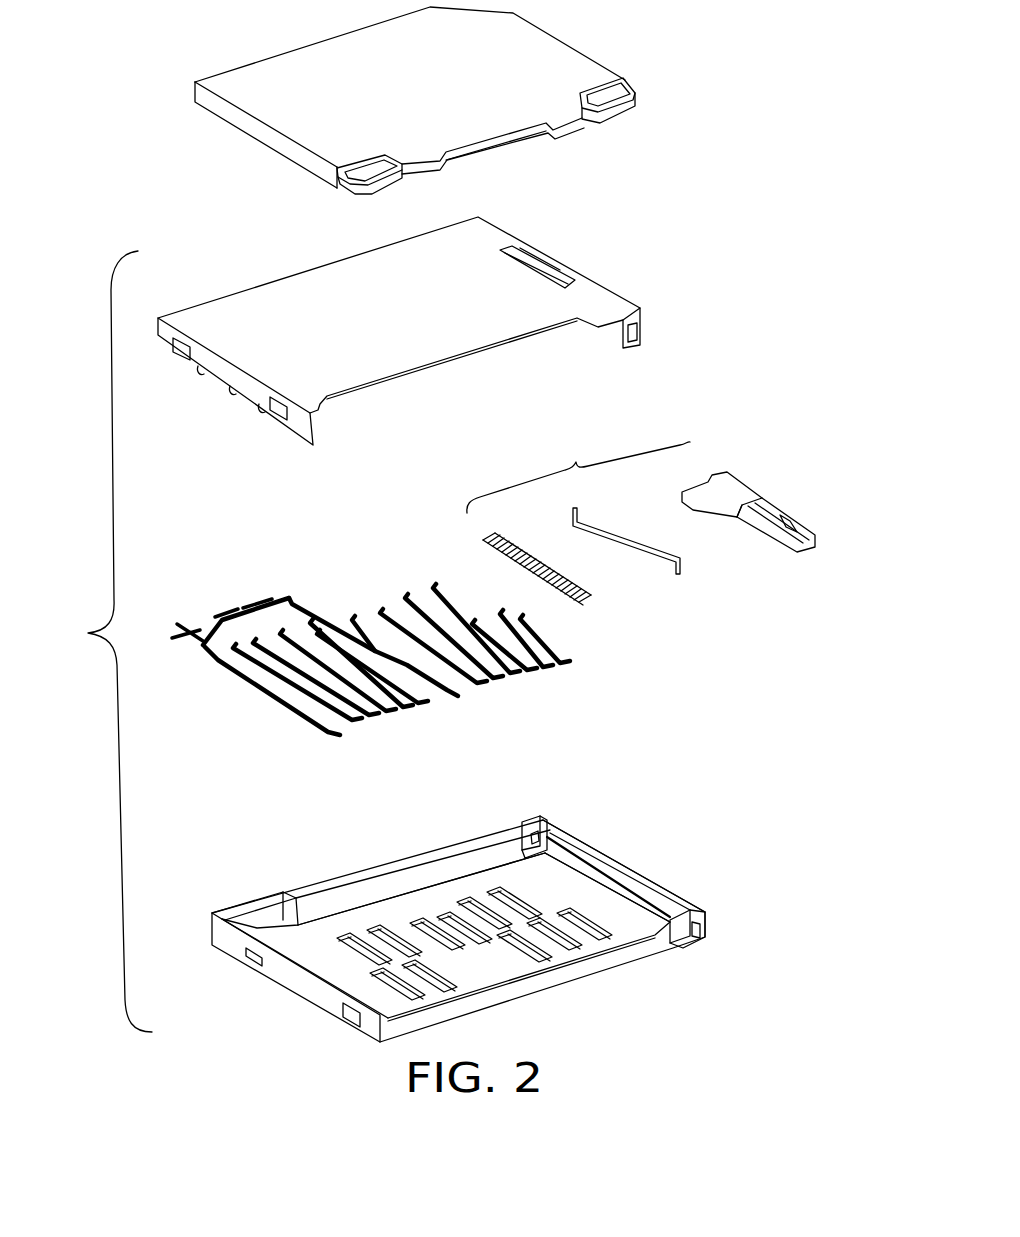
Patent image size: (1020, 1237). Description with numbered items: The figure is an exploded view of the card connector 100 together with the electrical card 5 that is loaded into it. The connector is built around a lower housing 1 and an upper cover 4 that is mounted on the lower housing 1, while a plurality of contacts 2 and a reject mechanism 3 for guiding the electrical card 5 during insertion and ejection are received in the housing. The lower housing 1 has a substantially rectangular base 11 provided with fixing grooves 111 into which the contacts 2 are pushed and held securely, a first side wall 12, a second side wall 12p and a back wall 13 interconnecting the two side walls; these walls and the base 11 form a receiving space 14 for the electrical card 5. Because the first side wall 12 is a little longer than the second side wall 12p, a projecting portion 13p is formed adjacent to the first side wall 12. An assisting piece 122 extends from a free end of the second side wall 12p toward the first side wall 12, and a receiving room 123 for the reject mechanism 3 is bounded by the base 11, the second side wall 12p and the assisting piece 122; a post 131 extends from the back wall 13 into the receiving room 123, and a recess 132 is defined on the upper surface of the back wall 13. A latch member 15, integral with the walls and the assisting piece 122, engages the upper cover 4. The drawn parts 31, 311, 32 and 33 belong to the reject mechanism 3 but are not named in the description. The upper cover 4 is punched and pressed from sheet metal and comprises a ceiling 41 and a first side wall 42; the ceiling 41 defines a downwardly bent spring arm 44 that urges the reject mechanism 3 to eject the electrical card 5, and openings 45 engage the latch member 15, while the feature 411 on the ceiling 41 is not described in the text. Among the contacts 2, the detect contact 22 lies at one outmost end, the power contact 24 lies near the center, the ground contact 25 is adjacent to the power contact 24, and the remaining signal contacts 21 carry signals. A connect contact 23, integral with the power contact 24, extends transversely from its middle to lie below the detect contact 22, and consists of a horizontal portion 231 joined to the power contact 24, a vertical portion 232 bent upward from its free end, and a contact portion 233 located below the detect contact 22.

The card connector 100 is at (88, 633).
The lower housing 1 is at (468, 913).
The base 11 is at (650, 940).
The fixing grooves 111 is at (550, 960).
The first side wall 12 is at (220, 937).
The second side wall 12p is at (558, 847).
The assisting piece 122 is at (705, 923).
The receiving room 123 is at (622, 882).
The back wall 13 is at (438, 858).
The projecting portion 13p is at (247, 900).
The post 131 is at (558, 850).
The recess 132 is at (535, 835).
The receiving space 14 is at (392, 912).
The latch member 15 is at (352, 1023).
The contacts 2 is at (353, 638).
The signal contacts 21 is at (428, 710).
The detect contact 22 is at (327, 735).
The connect contact 23 is at (212, 571).
The horizontal portion 231 is at (348, 618).
The vertical portion 232 is at (283, 597).
The contact portion 233 is at (245, 608).
The power contact 24 is at (455, 698).
The ground contact 25 is at (383, 610).
The reject mechanism 3 is at (641, 522).
The slider 31 is at (748, 483).
The heart-shaped cam groove 311 is at (792, 521).
The guide rod 32 is at (635, 553).
The coil spring 33 is at (587, 600).
The upper cover 4 is at (435, 343).
The ceiling 41 is at (413, 340).
The resilient tab 411 is at (545, 258).
The first side wall 42 is at (218, 378).
The spring arm 44 is at (630, 343).
The openings 45 is at (275, 420).
The electrical card 5 is at (600, 38).